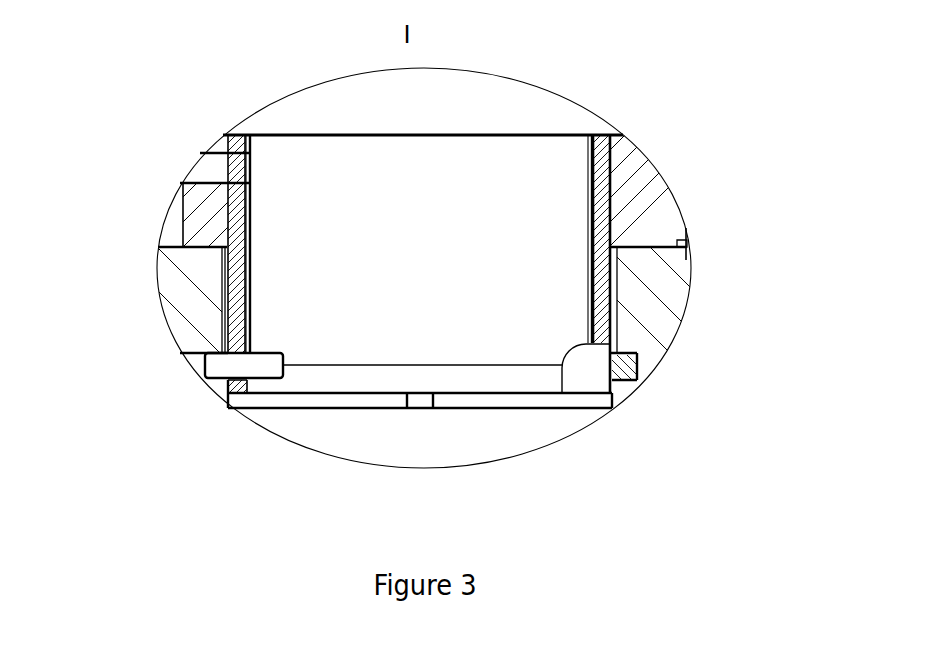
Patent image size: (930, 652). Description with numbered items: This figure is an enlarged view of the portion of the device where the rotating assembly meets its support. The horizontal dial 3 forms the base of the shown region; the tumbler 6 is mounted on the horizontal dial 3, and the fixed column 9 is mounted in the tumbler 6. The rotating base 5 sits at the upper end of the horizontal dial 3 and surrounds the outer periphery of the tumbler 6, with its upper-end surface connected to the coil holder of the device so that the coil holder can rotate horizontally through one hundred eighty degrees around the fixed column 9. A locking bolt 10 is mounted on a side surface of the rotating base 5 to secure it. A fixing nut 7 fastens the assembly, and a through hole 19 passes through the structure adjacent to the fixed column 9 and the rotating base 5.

The fixed column 9 is at (515, 170).
The locking bolt 10 is at (215, 168).
The rotating base 5 is at (640, 200).
The tumbler 6 is at (684, 242).
The horizontal dial 3 is at (650, 303).
The through hole 19 is at (612, 336).
The fixing nut 7 is at (237, 365).